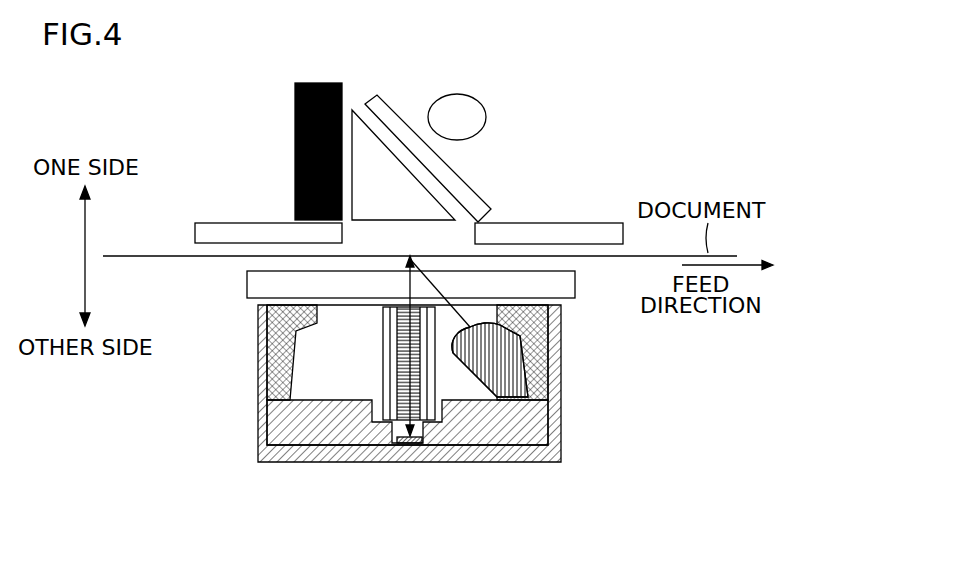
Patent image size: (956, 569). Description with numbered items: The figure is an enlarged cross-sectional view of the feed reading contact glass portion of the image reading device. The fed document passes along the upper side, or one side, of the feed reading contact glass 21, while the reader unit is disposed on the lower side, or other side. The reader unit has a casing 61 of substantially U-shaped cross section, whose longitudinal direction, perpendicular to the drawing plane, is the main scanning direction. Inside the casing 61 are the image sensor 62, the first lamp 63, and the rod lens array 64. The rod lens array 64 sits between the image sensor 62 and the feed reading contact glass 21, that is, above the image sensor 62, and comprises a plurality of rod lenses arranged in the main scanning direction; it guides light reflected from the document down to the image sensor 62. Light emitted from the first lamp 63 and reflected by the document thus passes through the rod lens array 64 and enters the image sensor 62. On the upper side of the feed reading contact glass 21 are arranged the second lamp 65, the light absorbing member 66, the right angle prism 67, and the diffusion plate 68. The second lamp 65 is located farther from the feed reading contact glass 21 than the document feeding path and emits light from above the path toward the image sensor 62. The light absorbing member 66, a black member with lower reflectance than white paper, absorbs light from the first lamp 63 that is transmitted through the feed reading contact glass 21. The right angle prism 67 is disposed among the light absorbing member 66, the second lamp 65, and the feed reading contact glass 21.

The feed reading contact glass 21 is at (567, 282).
The casing 61 is at (555, 370).
The image sensor 62 is at (408, 445).
The first lamp 63 is at (503, 350).
The rod lens array 64 is at (383, 380).
The second lamp 65 is at (477, 112).
The light absorbing member 66 is at (295, 153).
The right angle prism 67 is at (370, 110).
The diffusion plate 68 is at (458, 187).